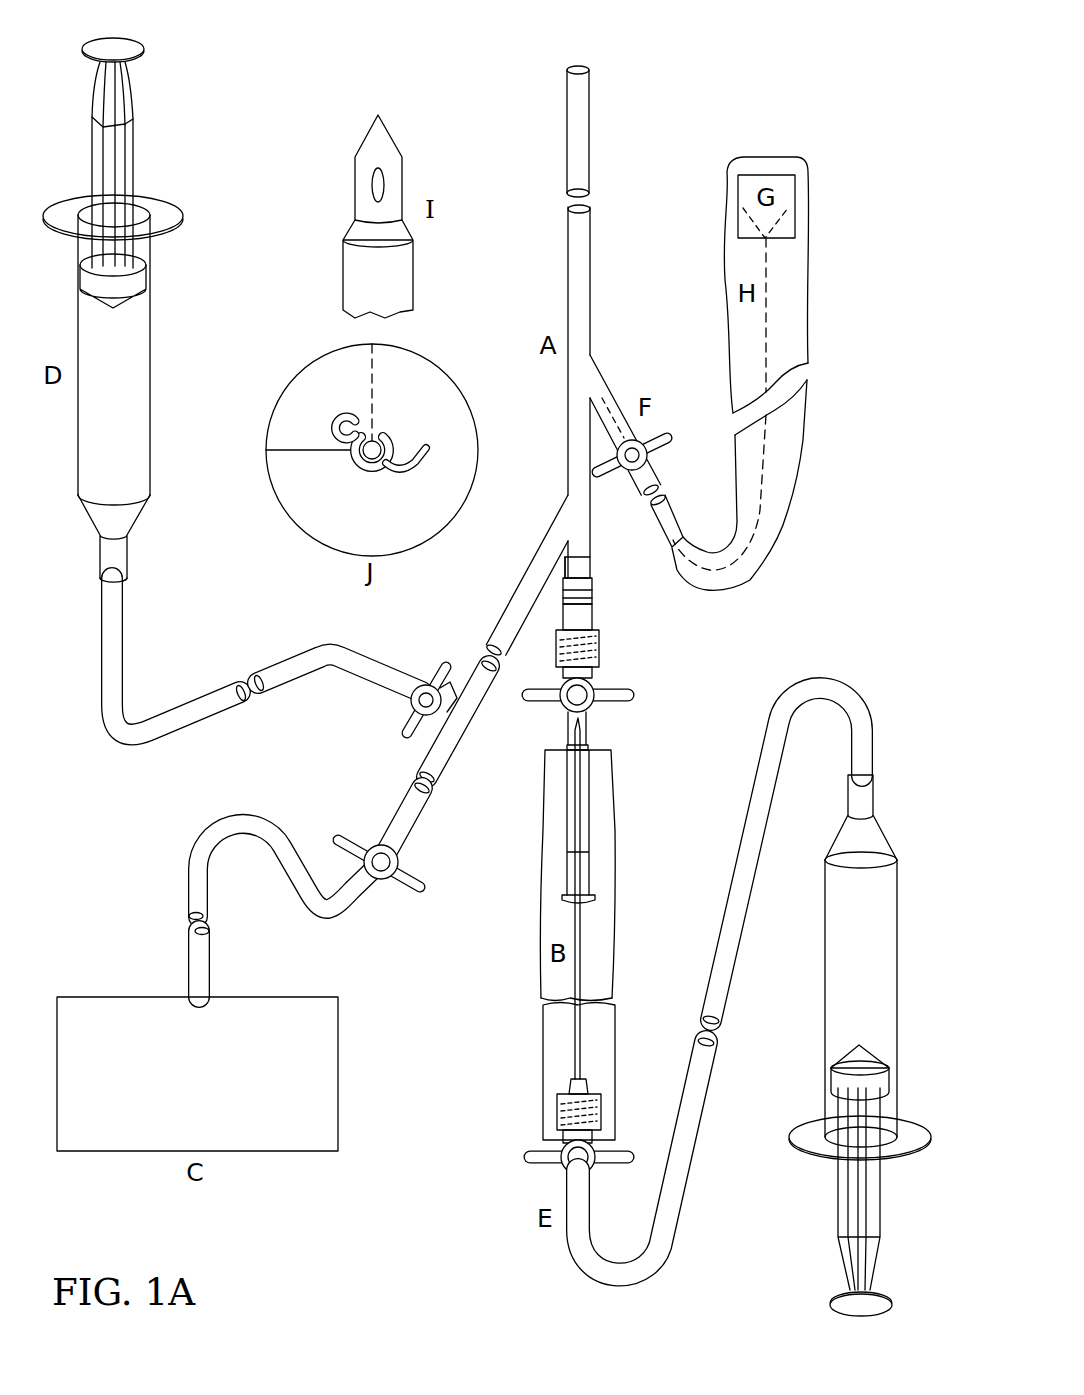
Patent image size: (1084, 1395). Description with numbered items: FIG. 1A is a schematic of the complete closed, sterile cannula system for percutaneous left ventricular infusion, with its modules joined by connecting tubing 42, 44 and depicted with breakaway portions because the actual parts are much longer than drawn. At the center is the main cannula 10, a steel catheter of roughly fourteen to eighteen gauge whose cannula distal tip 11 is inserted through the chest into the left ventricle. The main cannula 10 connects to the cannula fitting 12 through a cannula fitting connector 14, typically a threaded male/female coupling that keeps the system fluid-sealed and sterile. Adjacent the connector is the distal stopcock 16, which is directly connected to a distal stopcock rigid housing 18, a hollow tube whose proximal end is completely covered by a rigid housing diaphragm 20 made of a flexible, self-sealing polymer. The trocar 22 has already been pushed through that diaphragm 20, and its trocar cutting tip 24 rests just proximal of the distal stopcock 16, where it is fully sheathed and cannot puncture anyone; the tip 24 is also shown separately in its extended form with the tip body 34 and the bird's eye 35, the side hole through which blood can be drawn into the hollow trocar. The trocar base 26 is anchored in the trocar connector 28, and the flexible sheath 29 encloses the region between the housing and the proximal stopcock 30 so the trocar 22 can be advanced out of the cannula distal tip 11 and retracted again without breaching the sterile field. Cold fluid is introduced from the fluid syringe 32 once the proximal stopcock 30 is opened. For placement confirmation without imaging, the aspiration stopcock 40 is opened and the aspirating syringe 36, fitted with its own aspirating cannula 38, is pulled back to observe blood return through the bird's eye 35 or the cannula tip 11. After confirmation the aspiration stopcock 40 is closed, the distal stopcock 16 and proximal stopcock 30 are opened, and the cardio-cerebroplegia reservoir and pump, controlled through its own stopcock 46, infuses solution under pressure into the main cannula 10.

The main cannula 10 is at (634, 155).
The cannula distal tip 11 is at (592, 72).
The cannula fitting 12 is at (592, 568).
The cannula fitting connector 14 is at (600, 648).
The distal stopcock 16 is at (630, 695).
The distal stopcock rigid housing 18 is at (590, 775).
The rigid housing diaphragm 20 is at (597, 900).
The trocar 22 is at (582, 826).
The trocar cutting tip 24 is at (570, 735).
The trocar base 26 is at (575, 1068).
The trocar connector 28 is at (557, 1118).
The flexible sheath 29 is at (615, 935).
The proximal stopcock 30 is at (530, 1163).
The fluid syringe 32 is at (890, 910).
The needle tip body 34 is at (358, 205).
The bird's eye 35 is at (383, 178).
The aspirating syringe 36 is at (135, 352).
The aspirating cannula 38 is at (148, 740).
The aspiration stopcock 40 is at (420, 685).
The reservoir tubing 42 is at (137, 1000).
The tubing 44 is at (340, 927).
The stopcock 46 is at (375, 845).